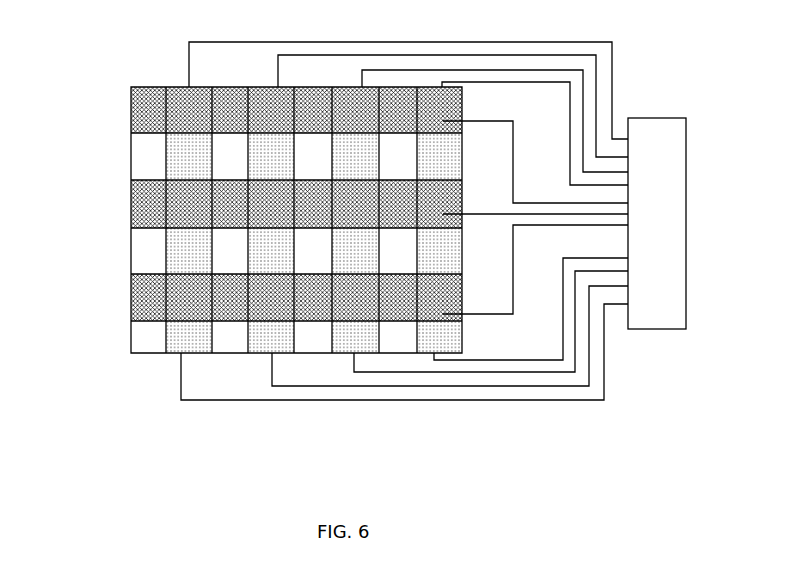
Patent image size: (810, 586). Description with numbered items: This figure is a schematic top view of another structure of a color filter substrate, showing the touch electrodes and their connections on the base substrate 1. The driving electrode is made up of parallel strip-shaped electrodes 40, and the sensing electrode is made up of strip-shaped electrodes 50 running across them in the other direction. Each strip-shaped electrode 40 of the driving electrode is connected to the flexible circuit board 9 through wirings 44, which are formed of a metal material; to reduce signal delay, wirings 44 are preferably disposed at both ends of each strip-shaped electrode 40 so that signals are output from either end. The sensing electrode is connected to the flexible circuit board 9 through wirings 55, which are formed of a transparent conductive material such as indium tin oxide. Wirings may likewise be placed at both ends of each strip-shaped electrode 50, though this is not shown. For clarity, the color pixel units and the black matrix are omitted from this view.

The base substrate 1 is at (92, 249).
The flexible circuit board 9 is at (686, 210).
The strip-shaped electrode 40 is at (172, 342).
The wirings 44 is at (189, 54).
The strip-shaped electrode 50 is at (132, 130).
The wirings 55 is at (477, 213).